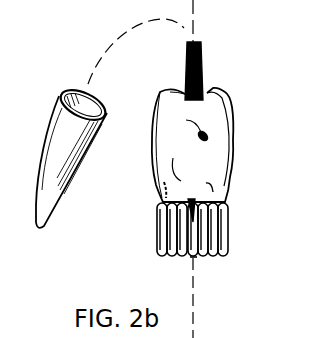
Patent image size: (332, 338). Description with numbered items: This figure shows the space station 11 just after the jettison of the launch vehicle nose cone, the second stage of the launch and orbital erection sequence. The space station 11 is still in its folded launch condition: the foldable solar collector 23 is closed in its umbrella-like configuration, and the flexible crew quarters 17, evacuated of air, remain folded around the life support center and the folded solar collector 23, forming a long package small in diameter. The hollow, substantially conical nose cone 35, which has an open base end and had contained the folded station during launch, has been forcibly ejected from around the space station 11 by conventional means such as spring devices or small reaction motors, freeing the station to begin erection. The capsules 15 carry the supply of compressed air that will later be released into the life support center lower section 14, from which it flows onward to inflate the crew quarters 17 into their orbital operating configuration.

The space station 11 is at (243, 111).
The life support center lower section 14 is at (195, 257).
The capsules 15 is at (226, 231).
The crew quarters 17 is at (234, 147).
The foldable solar collector 23 is at (205, 68).
The nose cone 35 is at (85, 177).